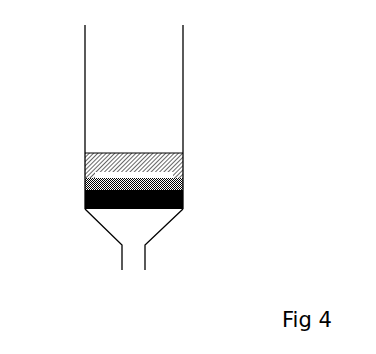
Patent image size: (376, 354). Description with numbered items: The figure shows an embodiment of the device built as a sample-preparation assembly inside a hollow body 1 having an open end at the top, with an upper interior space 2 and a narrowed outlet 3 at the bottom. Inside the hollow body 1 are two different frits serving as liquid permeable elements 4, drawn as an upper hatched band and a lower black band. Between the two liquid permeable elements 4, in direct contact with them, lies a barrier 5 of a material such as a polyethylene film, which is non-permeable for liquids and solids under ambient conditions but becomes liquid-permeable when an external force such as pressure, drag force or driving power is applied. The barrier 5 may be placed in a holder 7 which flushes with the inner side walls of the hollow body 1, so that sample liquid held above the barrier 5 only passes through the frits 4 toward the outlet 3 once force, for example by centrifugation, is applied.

The hollow body 1 is at (183, 83).
The column interior space 2 is at (135, 37).
The outlet 3 is at (134, 254).
The liquid permeable element 4 is at (172, 159).
The barrier 5 is at (92, 185).
The holder 7 is at (90, 172).